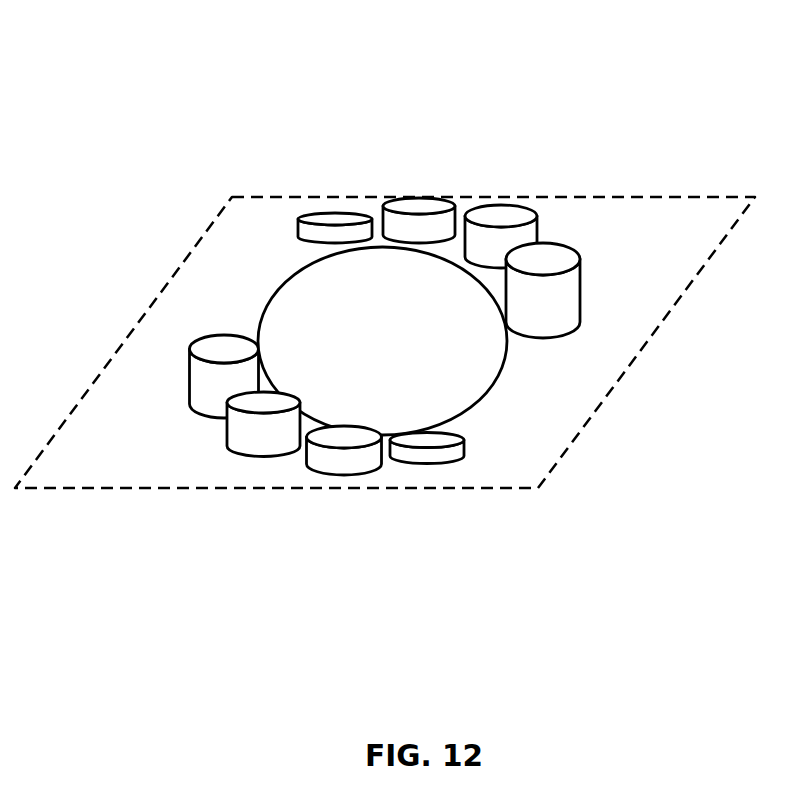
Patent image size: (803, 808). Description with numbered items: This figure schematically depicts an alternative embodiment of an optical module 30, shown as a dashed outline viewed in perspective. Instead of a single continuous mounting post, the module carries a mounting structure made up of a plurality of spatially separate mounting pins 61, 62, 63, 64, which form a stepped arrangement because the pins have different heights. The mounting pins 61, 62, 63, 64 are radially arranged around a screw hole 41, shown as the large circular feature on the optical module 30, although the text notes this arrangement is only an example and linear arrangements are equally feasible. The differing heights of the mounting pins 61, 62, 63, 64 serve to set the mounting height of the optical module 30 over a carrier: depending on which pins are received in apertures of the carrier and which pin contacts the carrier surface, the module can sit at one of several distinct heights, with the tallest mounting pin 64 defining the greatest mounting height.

The optical module 30 is at (522, 475).
The screw hole 41 is at (310, 302).
The mounting pin 61 is at (341, 213).
The mounting pin 62 is at (420, 203).
The mounting pin 63 is at (500, 210).
The mounting pin 64 is at (558, 255).